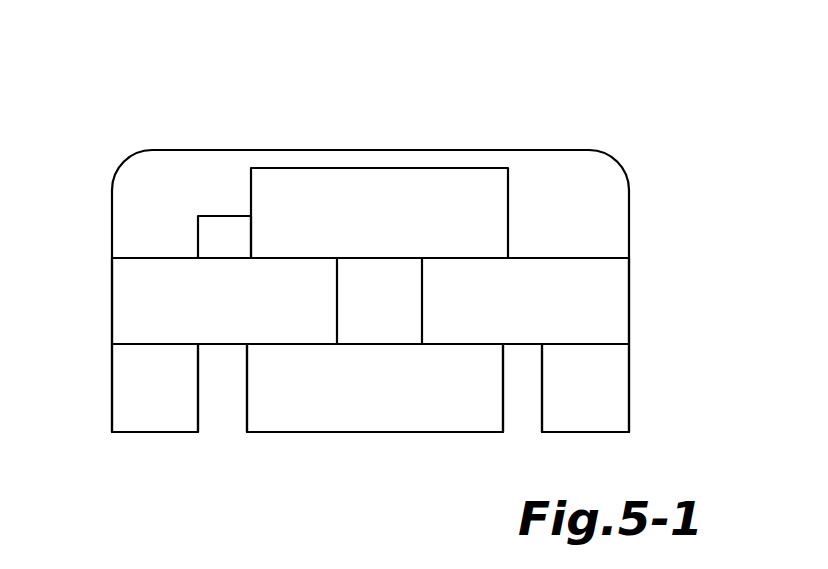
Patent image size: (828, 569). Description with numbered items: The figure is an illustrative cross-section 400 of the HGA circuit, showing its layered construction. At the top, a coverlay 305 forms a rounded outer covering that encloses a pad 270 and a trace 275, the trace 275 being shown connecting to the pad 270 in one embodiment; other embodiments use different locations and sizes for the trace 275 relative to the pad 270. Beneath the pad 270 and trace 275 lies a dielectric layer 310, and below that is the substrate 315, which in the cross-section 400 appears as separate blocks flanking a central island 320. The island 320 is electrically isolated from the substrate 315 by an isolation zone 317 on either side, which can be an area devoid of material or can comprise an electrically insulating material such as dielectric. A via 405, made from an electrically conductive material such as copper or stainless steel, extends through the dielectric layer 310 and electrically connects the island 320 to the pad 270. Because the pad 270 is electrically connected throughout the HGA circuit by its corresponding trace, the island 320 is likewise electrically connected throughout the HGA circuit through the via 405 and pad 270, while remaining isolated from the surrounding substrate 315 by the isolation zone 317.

The cross-section 400 is at (210, 98).
The pad 270 is at (458, 188).
The trace 275 is at (218, 237).
The coverlay 305 is at (583, 223).
The dielectric layer 310 is at (120, 325).
The via 405 is at (362, 305).
The substrate 315 is at (130, 402).
The isolation zone 317 is at (222, 416).
The island 320 is at (347, 397).